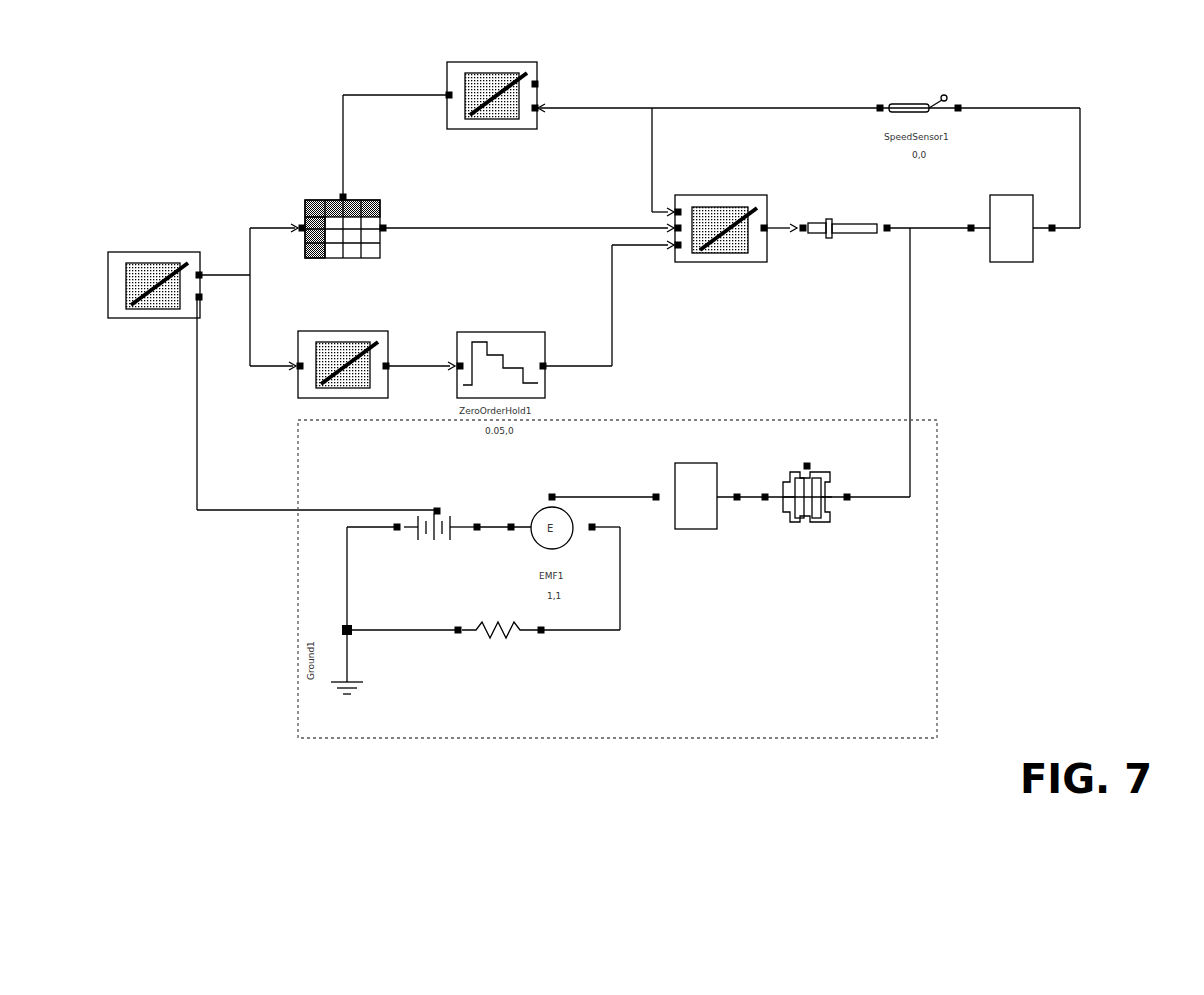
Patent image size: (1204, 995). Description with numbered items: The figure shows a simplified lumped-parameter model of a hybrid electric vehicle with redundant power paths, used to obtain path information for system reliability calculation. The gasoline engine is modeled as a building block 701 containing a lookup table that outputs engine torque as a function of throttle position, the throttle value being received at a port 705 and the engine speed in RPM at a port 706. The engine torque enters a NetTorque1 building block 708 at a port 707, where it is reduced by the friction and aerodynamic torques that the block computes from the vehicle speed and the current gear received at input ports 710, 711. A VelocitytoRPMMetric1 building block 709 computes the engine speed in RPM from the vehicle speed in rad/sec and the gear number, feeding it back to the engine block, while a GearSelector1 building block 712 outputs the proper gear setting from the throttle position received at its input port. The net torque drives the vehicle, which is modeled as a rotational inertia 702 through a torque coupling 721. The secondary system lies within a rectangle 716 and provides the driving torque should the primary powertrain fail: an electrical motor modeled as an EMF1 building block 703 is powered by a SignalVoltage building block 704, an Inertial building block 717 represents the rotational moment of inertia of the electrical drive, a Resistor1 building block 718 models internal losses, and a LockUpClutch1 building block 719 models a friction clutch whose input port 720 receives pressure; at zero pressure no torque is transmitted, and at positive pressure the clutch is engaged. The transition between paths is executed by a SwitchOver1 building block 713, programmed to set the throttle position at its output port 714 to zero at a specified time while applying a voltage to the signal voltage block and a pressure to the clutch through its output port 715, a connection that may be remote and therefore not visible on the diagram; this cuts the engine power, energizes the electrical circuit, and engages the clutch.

The building block including a lookup table 701 is at (320, 190).
The rotational inertia 702 is at (1010, 192).
The EMF1 building block 703 is at (575, 497).
The SignalVoltage building block 704 is at (440, 511).
The port 705 is at (300, 230).
The port 706 is at (344, 196).
The port 707 is at (675, 230).
The NetTorque1 building block 708 is at (733, 253).
The VelocitytoRPMMetric1 building block 709 is at (537, 61).
The input port 710 is at (682, 209).
The input port 711 is at (693, 253).
The GearSelector1 building block 712 is at (357, 320).
The SwitchOver1 building block 713 is at (118, 248).
The output port 714 is at (193, 252).
The output port 715 is at (192, 300).
The rectangle 716 is at (938, 446).
The Inertial building block 717 is at (718, 468).
The Resistor1 building block 718 is at (518, 640).
The LockUpClutch1 building block 719 is at (827, 518).
The input port 720 is at (809, 465).
The torque coupling (Torque1) 721 is at (850, 223).